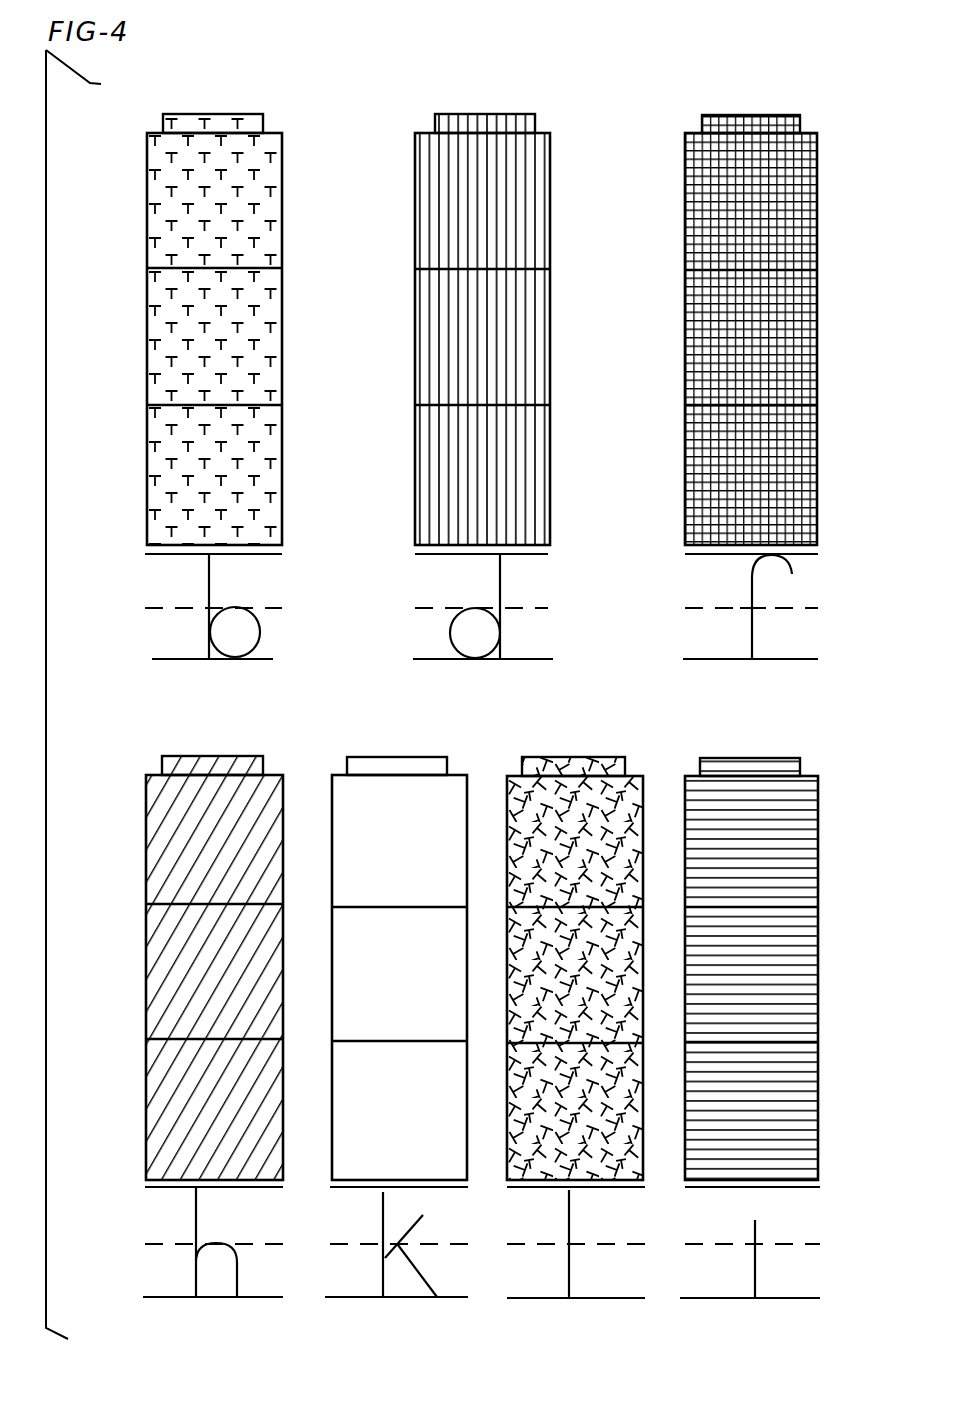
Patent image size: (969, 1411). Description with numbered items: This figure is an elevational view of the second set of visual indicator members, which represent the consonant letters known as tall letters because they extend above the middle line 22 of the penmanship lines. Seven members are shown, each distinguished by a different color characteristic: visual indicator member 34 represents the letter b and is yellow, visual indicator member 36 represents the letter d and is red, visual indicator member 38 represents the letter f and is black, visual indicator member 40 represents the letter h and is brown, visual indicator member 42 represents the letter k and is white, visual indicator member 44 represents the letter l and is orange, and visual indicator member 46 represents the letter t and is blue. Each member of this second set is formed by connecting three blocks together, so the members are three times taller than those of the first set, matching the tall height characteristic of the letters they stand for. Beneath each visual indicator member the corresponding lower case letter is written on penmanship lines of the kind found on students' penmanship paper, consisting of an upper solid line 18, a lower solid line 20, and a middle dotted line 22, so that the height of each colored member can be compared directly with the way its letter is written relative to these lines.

The upper solid line 18 is at (168, 554).
The lower solid line 20 is at (165, 658).
The middle dotted line 22 is at (160, 612).
The visual indicator member 34 is at (263, 115).
The visual indicator member 36 is at (535, 115).
The visual indicator member 38 is at (785, 113).
The visual indicator member 40 is at (252, 755).
The visual indicator member 42 is at (447, 757).
The visual indicator member 44 is at (617, 757).
The visual indicator member 46 is at (773, 758).